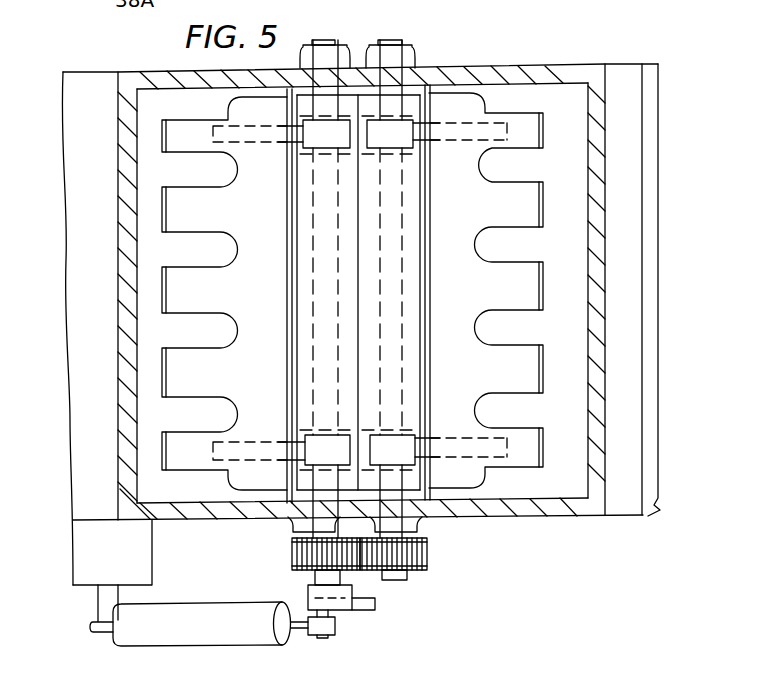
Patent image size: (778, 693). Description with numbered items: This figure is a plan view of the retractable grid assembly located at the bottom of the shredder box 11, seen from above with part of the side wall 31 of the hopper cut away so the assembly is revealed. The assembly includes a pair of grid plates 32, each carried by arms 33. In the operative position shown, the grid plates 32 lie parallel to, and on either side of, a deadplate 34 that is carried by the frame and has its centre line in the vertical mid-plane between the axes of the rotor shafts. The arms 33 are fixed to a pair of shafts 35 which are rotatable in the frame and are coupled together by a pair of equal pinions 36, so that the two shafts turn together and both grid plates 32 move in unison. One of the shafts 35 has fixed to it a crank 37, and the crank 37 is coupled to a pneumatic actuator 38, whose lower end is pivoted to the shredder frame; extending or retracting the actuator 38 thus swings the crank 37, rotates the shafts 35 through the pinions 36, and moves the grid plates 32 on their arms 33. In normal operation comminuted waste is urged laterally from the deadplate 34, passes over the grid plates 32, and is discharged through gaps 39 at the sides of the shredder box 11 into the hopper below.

The shredder box 11 is at (609, 166).
The side wall 31 is at (532, 516).
The grid plate 32 is at (162, 131).
The arm 33 is at (262, 144).
The deadplate 34 is at (392, 281).
The shaft 35 is at (393, 42).
The pinion 36 is at (291, 550).
The crank 37 is at (362, 611).
The pneumatic actuator 38 is at (203, 612).
The gap 39 is at (171, 259).